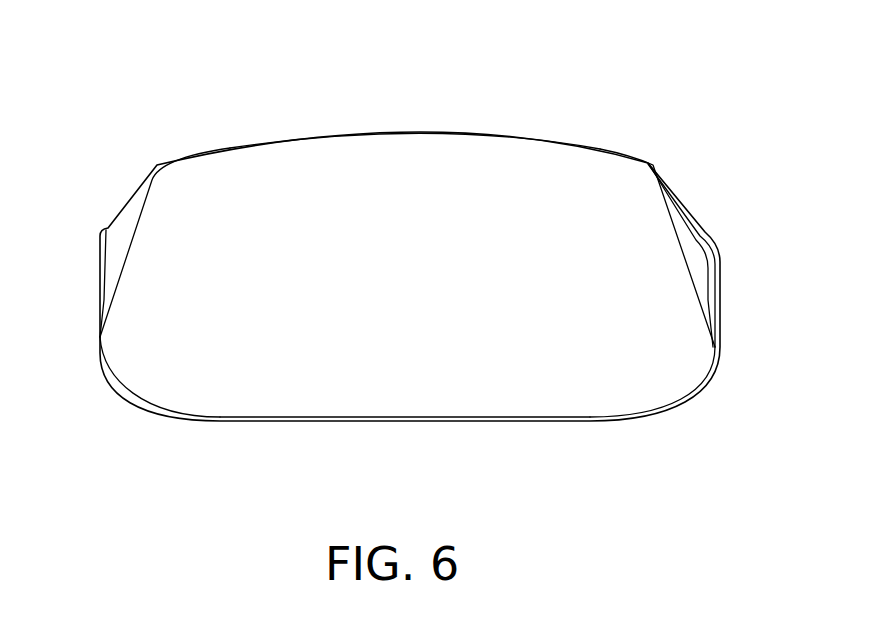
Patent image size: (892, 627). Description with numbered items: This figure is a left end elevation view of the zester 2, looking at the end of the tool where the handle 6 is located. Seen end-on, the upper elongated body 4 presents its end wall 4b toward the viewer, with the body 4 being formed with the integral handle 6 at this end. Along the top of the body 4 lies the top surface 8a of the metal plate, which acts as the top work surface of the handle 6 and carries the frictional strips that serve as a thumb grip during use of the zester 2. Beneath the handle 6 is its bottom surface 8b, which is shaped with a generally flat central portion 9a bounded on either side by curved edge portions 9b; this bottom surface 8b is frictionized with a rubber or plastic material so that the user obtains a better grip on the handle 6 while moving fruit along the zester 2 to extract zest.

The zester 2 is at (704, 186).
The upper elongated body 4 is at (575, 145).
The end wall 4b is at (431, 268).
The handle 6 is at (623, 202).
The top surface of the plate 8a is at (455, 133).
The bottom surface of the handle 8b is at (516, 422).
The flat central portion 9a is at (303, 422).
The curved edge portions 9b is at (112, 380).